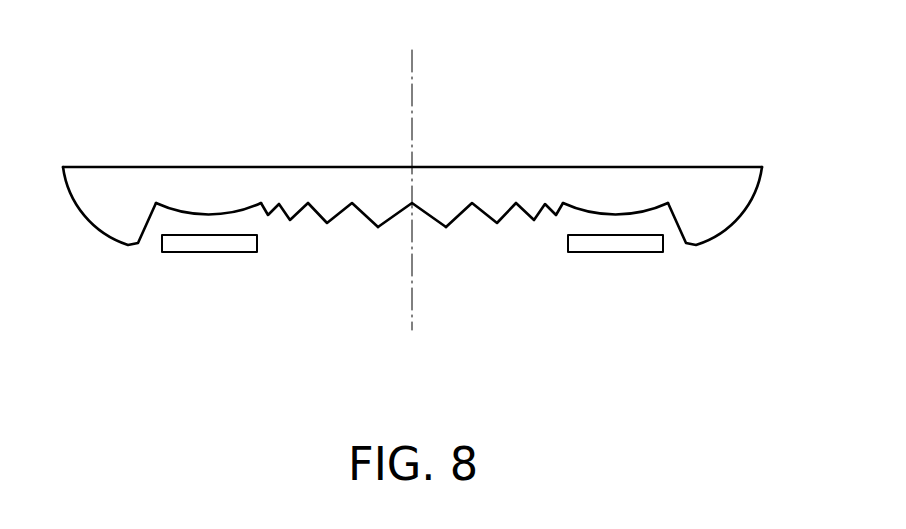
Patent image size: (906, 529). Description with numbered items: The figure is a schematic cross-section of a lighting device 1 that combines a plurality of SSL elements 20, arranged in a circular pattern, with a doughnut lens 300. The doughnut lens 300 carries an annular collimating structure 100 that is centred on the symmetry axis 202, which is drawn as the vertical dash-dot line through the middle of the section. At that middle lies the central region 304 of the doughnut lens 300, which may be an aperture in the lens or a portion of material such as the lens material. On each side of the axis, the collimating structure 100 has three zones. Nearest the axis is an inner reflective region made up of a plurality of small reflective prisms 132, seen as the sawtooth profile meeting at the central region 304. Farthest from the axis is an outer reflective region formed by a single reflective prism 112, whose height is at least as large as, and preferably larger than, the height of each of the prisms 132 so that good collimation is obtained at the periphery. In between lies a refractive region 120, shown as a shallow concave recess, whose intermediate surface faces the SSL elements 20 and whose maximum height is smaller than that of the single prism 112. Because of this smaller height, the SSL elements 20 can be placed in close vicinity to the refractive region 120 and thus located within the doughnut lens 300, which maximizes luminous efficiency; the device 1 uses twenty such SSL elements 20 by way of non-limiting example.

The lighting device 1 is at (91, 128).
The SSL elements 20 is at (210, 243).
The annular collimating structure 100 is at (710, 192).
The single reflective prism 112 is at (120, 225).
The refractive region 120 is at (210, 192).
The reflective prisms 132 is at (330, 210).
The symmetry axis 202 is at (412, 63).
The doughnut lens 300 is at (317, 167).
The central region 304 is at (407, 201).